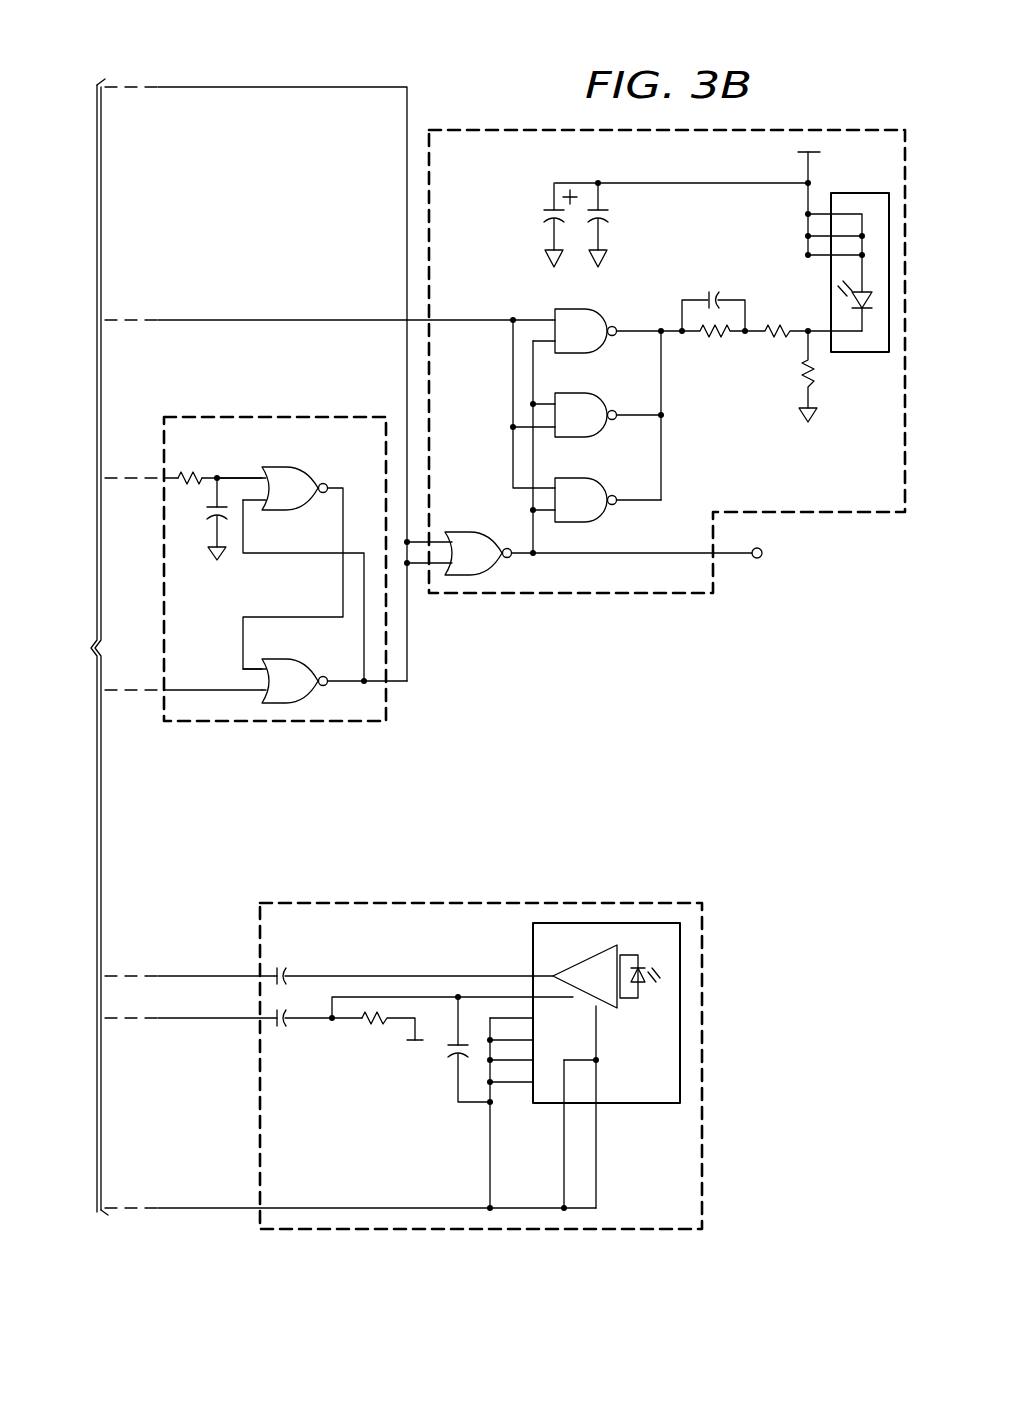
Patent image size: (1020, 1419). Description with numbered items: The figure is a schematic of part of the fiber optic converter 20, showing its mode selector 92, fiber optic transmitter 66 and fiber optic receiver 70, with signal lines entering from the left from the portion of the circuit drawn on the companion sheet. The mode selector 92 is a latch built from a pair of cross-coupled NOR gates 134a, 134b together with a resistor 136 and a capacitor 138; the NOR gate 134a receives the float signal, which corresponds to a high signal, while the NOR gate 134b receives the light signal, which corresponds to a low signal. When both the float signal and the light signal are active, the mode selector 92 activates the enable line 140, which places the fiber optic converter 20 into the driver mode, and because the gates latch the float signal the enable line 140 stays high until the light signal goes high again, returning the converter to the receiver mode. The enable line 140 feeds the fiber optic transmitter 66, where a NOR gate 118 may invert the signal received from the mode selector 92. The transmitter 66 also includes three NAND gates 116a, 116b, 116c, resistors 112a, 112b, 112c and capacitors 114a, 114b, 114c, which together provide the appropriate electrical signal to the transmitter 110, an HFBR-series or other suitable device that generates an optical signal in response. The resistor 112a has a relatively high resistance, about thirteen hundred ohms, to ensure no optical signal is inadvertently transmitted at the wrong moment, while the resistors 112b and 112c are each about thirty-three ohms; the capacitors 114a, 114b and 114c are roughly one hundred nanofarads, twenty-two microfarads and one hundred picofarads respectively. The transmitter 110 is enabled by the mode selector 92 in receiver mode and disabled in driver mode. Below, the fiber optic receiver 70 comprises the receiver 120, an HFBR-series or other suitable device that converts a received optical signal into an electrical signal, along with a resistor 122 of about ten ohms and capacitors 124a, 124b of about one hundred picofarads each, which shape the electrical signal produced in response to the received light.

The fiber optic converter 20 is at (199, 45).
The fiber optic transmitter 66 is at (838, 515).
The fiber optic receiver 70 is at (703, 1066).
The mode selector 92 is at (262, 415).
The transmitter 110 is at (862, 353).
The resistor 112a is at (814, 376).
The resistor 112b is at (774, 342).
The resistor 112c is at (708, 342).
The capacitor 114a is at (606, 212).
The capacitor 114b is at (548, 210).
The capacitor 114c is at (714, 292).
The NAND gate 116a is at (600, 309).
The NAND gate 116b is at (600, 394).
The NAND gate 116c is at (618, 466).
The NOR gate 118 is at (468, 531).
The receiver 120 is at (532, 953).
The resistor 122 is at (378, 1030).
The capacitor 124a is at (284, 966).
The capacitor 124b is at (284, 1030).
The NOR gate 134a is at (328, 460).
The NOR gate 134b is at (328, 650).
The resistor 136 is at (196, 475).
The capacitor 138 is at (205, 512).
The enable line 140 is at (410, 644).